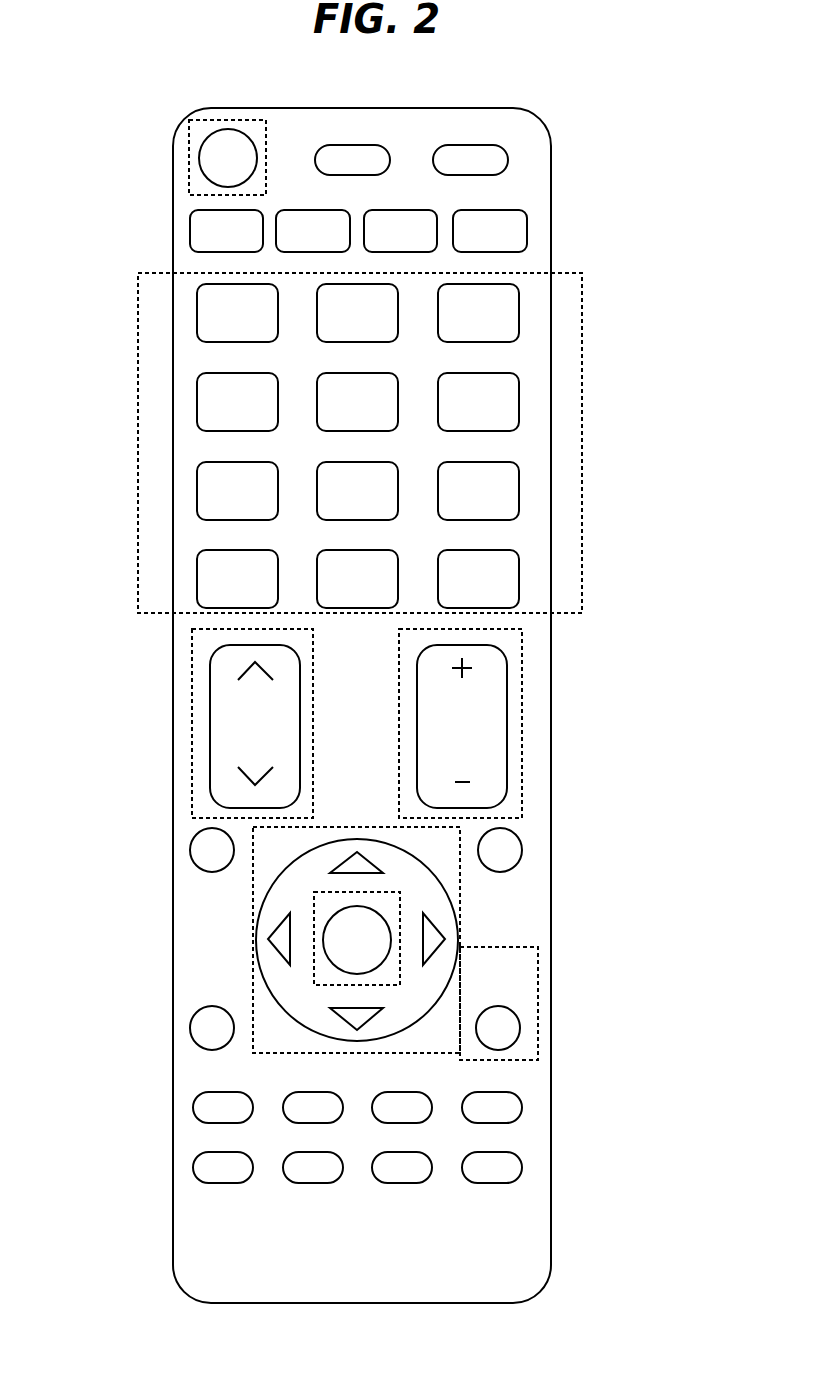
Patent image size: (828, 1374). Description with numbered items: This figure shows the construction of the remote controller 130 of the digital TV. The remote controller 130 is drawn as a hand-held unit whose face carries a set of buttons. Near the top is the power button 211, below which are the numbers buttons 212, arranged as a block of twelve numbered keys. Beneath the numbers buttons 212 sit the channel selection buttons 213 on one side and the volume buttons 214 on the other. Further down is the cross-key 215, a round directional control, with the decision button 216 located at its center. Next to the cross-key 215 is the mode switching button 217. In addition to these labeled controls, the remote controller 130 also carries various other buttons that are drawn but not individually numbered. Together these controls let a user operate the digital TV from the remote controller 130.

The remote controller 130 is at (548, 128).
The power button 211 is at (190, 172).
The numbers buttons 212 is at (138, 375).
The channel selection buttons 213 is at (193, 692).
The volume buttons 214 is at (520, 700).
The cross-key 215 is at (253, 930).
The decision button 216 is at (400, 903).
The mode switching button 217 is at (538, 1013).